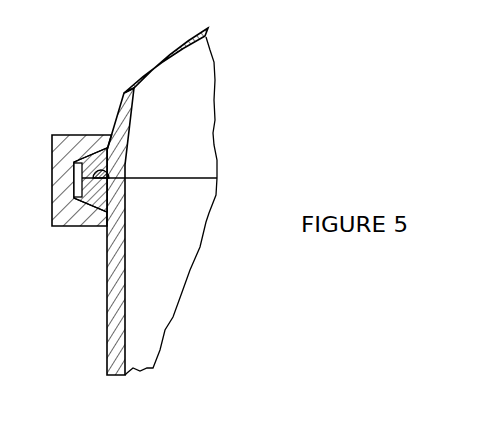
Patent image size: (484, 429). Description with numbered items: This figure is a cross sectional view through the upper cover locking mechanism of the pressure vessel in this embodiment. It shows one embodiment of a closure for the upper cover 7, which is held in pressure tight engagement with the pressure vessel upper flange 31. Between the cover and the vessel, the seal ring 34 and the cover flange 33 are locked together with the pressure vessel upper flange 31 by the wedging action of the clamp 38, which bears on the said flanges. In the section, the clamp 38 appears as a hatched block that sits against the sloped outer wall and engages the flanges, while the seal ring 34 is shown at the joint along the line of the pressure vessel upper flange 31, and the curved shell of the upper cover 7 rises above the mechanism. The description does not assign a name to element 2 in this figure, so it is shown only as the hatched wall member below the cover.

The upper cover 7 is at (166, 52).
The wall member 2 is at (107, 265).
The clamp 38 is at (68, 135).
The cover flange 33 is at (124, 163).
The seal ring 34 is at (124, 171).
The pressure vessel upper flange 31 is at (124, 193).